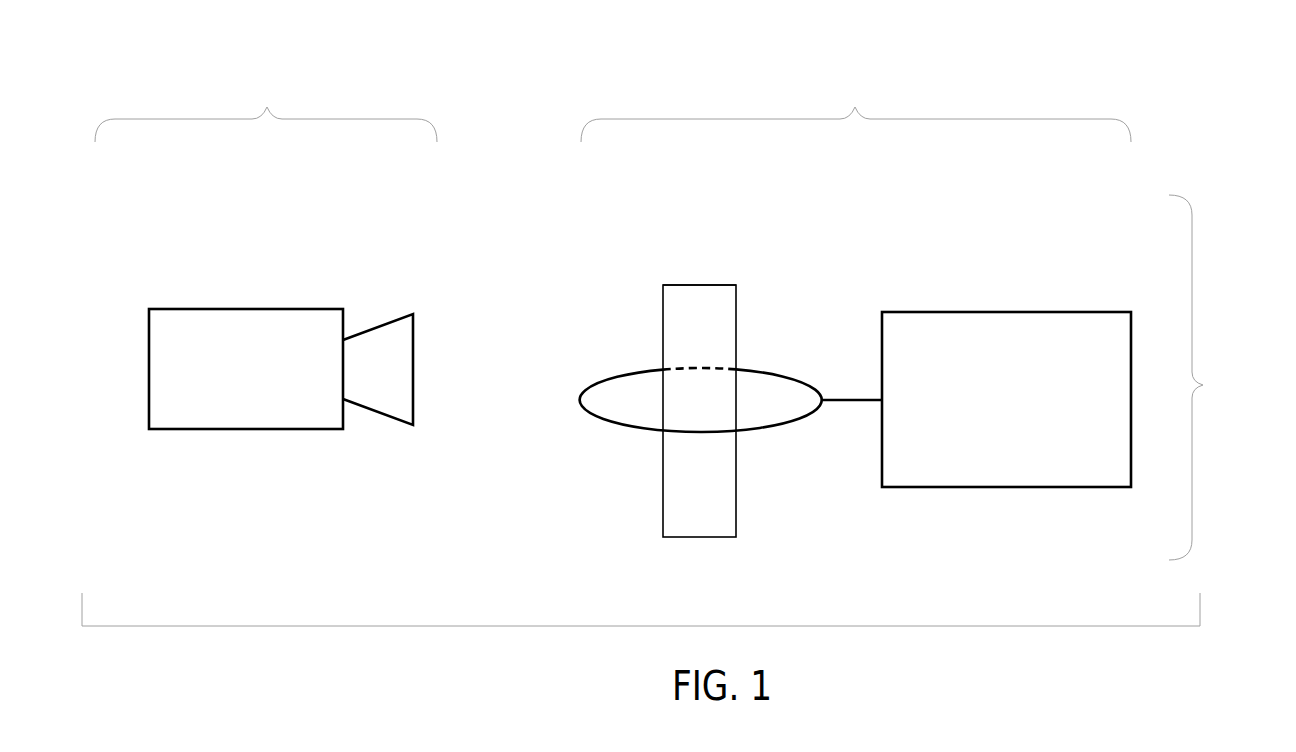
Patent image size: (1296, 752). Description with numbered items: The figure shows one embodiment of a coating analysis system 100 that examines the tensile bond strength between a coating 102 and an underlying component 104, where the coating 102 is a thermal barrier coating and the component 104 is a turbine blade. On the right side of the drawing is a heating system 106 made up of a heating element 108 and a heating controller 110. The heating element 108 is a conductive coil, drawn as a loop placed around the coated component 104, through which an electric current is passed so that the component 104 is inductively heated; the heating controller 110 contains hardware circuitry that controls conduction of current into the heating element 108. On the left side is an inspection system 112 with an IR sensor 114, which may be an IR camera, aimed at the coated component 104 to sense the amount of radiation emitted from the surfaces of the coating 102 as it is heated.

The coating analysis system 100 is at (1203, 385).
The coating 102 is at (673, 301).
The component 104 is at (693, 285).
The heating system 106 is at (855, 107).
The heating element 108 is at (787, 375).
The heating controller 110 is at (1018, 312).
The inspection system 112 is at (267, 107).
The IR sensor 114 is at (239, 309).